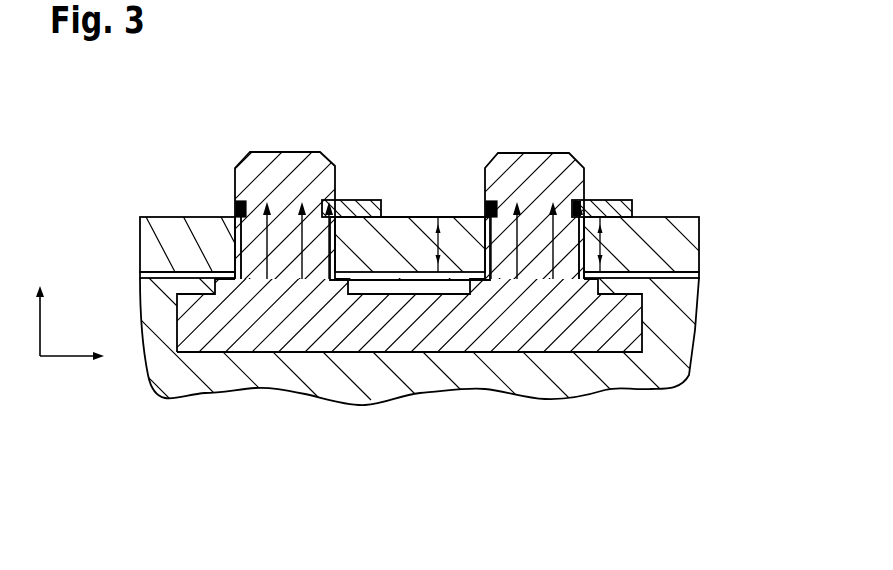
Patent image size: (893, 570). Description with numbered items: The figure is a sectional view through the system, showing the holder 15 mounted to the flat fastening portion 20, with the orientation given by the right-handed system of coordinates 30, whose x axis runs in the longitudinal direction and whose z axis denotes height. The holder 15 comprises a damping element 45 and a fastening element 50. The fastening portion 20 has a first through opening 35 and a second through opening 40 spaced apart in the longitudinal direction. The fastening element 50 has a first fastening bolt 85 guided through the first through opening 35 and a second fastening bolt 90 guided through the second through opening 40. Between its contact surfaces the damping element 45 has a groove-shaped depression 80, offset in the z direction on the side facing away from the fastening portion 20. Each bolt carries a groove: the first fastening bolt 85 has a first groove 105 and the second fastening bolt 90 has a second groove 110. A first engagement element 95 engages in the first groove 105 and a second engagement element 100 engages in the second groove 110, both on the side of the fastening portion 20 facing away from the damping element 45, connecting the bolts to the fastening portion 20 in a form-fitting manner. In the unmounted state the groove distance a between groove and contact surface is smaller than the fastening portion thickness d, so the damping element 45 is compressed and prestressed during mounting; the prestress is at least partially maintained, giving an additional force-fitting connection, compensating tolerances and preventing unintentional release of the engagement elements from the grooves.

The holder 15 is at (446, 285).
The fastening portion 20 is at (678, 245).
The system of coordinates 30 is at (45, 376).
The first through opening 35 is at (217, 235).
The second through opening 40 is at (393, 305).
The damping element 45 is at (673, 322).
The fastening element 50 is at (628, 334).
The depression 80 is at (375, 279).
The first fastening bolt 85 is at (286, 167).
The second fastening bolt 90 is at (542, 174).
The first engagement element 95 is at (364, 206).
The second engagement element 100 is at (530, 209).
The first groove 105 is at (237, 208).
The second groove 110 is at (486, 207).
The fastening portion thickness d is at (436, 234).
The groove distance a is at (601, 243).